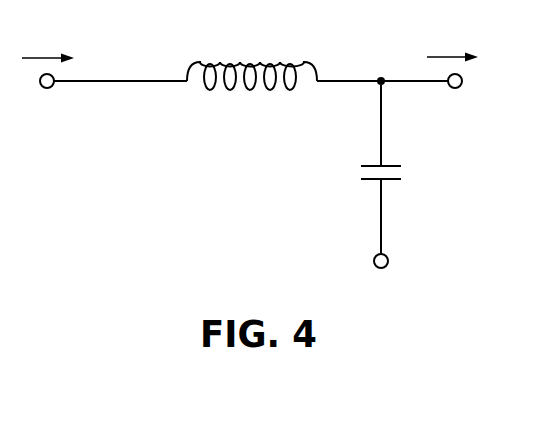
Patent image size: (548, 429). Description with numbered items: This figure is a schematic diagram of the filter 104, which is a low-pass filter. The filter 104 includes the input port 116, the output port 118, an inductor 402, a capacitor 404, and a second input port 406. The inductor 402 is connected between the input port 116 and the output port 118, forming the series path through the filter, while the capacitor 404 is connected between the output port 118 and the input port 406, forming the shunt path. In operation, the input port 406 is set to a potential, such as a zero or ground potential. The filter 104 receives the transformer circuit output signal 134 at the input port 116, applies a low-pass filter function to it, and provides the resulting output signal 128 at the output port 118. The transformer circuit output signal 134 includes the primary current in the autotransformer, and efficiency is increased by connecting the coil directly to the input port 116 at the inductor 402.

The filter 104 is at (137, 223).
The input port 116 is at (47, 89).
The output port 118 is at (455, 89).
The output signal 128 is at (455, 55).
The transformer circuit output signal 134 is at (49, 56).
The inductor 402 is at (262, 63).
The capacitor 404 is at (391, 181).
The input port 406 is at (389, 262).